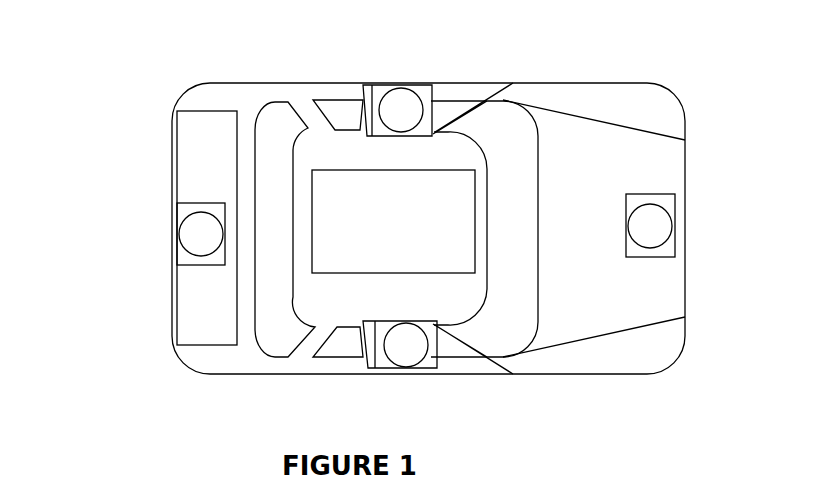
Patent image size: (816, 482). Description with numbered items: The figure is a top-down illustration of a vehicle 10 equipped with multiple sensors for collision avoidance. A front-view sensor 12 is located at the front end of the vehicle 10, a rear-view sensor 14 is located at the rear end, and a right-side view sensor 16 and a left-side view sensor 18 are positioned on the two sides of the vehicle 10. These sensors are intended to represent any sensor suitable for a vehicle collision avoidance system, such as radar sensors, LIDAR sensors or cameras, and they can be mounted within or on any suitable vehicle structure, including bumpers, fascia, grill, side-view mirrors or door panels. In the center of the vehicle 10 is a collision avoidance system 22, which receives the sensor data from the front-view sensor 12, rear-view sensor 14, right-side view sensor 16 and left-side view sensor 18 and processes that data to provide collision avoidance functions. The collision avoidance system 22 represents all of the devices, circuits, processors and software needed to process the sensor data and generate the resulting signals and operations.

The vehicle 10 is at (170, 55).
The front-view sensor 12 is at (650, 226).
The rear-view sensor 14 is at (200, 233).
The right-side view sensor 16 is at (406, 345).
The left-side view sensor 18 is at (400, 110).
The collision avoidance system 22 is at (357, 273).